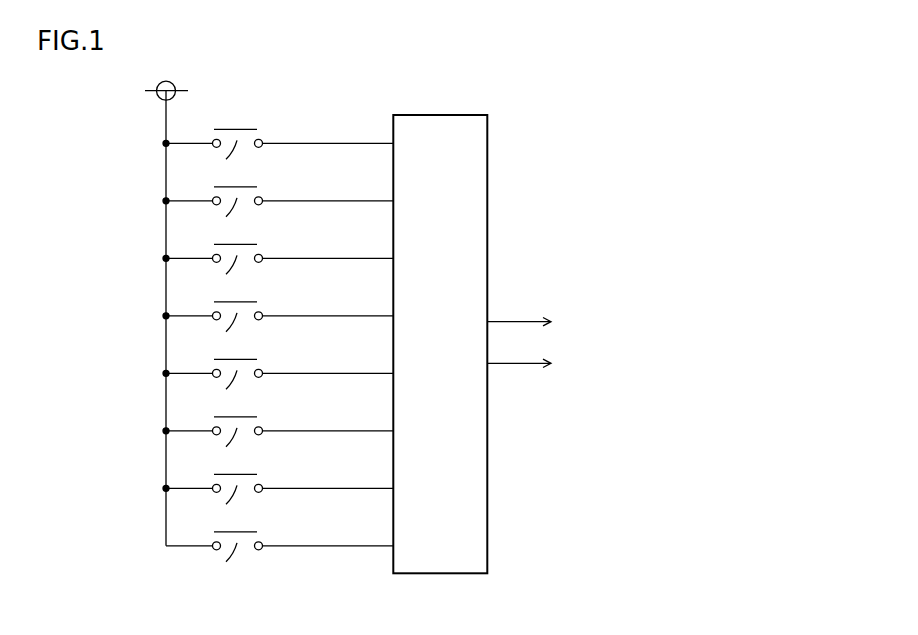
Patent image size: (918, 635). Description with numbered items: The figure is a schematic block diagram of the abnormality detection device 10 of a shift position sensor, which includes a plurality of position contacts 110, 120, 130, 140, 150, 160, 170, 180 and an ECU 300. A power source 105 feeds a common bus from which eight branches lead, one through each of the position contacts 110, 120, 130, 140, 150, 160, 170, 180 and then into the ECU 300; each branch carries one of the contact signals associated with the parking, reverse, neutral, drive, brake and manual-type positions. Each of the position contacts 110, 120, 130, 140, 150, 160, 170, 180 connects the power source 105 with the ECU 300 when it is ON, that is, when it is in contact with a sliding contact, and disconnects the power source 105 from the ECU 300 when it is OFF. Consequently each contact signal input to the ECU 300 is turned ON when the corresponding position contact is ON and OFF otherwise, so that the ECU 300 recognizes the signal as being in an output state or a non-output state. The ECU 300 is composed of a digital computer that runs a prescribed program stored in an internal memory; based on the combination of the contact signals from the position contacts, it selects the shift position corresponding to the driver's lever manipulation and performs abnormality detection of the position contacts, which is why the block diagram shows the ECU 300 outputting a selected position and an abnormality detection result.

The abnormality detection device 10 is at (650, 80).
The power source 105 is at (159, 100).
The position contact 110 is at (226, 159).
The position contact 120 is at (226, 217).
The position contact 130 is at (226, 274).
The position contact 140 is at (226, 332).
The position contact 150 is at (226, 389).
The position contact 160 is at (226, 447).
The position contact 170 is at (226, 504).
The position contact 180 is at (226, 562).
The ECU 300 is at (488, 158).